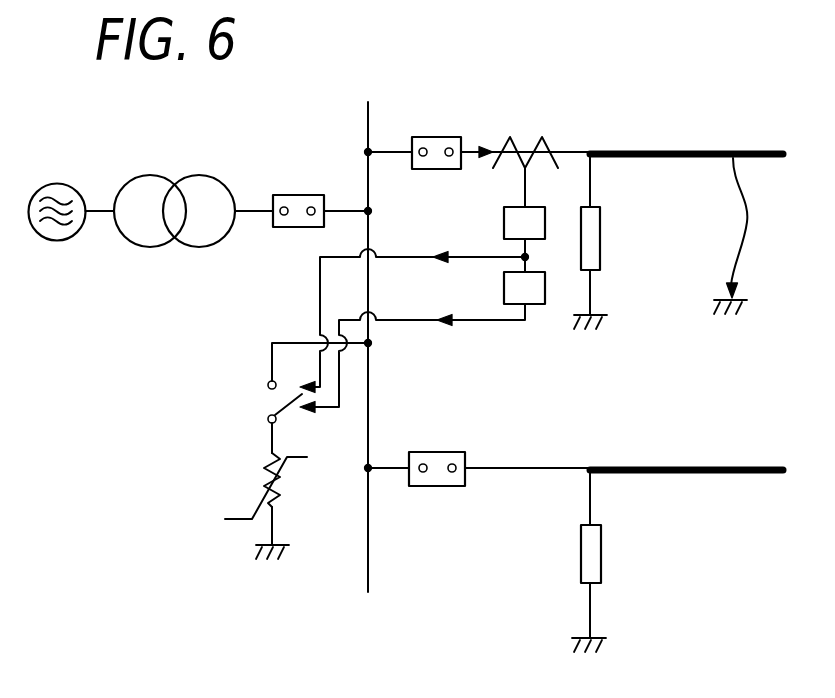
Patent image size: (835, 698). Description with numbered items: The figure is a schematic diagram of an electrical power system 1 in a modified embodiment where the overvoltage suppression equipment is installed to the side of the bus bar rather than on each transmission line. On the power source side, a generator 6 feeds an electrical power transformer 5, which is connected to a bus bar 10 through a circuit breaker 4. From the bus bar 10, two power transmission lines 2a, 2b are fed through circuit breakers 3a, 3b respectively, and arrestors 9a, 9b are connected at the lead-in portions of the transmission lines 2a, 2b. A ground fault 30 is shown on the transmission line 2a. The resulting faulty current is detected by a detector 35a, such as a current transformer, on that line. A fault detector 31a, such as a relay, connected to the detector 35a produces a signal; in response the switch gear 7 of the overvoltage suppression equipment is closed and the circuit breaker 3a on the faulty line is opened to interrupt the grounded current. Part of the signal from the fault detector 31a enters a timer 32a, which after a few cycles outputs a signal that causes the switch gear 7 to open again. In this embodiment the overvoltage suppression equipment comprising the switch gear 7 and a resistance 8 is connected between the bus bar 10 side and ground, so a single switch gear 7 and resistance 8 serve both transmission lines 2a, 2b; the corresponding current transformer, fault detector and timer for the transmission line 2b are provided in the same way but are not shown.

The electrical power system 1 is at (358, 124).
The power transmission line 2a is at (673, 150).
The power transmission line 2b is at (657, 466).
The circuit breaker 3a is at (453, 137).
The circuit breaker 3b is at (448, 452).
The circuit breaker 4 is at (310, 195).
The electrical power transformer 5 is at (162, 176).
The generator 6 is at (62, 183).
The switch gear 7 is at (268, 405).
The resistance 8 is at (262, 475).
The arrestor 9a is at (602, 220).
The arrestor 9b is at (602, 560).
The bus bar 10 is at (370, 557).
The ground fault 30 is at (748, 220).
The fault detector 31a is at (505, 219).
The timer 32a is at (538, 304).
The detector 35a is at (525, 143).